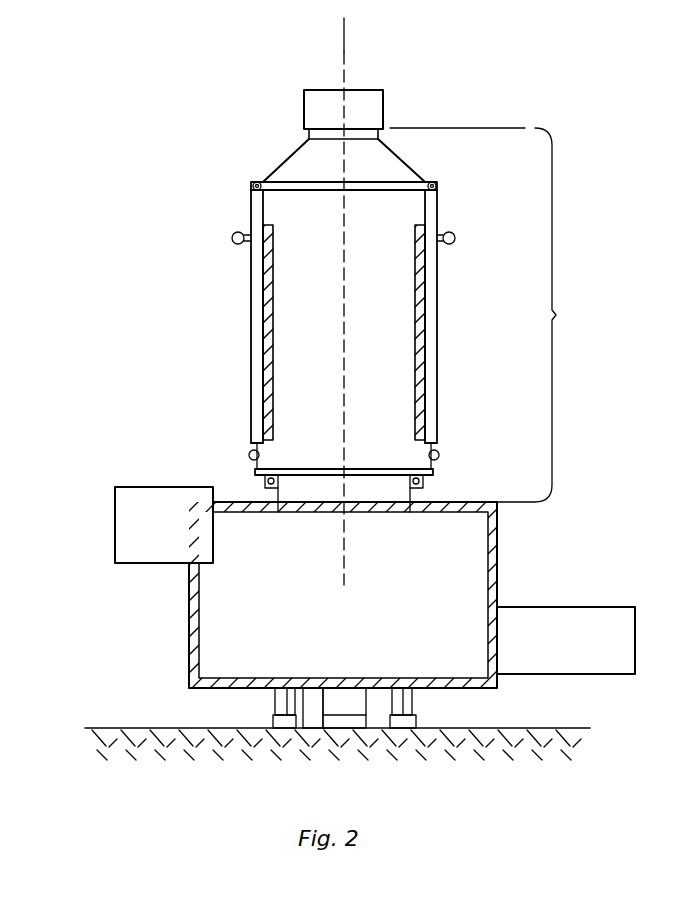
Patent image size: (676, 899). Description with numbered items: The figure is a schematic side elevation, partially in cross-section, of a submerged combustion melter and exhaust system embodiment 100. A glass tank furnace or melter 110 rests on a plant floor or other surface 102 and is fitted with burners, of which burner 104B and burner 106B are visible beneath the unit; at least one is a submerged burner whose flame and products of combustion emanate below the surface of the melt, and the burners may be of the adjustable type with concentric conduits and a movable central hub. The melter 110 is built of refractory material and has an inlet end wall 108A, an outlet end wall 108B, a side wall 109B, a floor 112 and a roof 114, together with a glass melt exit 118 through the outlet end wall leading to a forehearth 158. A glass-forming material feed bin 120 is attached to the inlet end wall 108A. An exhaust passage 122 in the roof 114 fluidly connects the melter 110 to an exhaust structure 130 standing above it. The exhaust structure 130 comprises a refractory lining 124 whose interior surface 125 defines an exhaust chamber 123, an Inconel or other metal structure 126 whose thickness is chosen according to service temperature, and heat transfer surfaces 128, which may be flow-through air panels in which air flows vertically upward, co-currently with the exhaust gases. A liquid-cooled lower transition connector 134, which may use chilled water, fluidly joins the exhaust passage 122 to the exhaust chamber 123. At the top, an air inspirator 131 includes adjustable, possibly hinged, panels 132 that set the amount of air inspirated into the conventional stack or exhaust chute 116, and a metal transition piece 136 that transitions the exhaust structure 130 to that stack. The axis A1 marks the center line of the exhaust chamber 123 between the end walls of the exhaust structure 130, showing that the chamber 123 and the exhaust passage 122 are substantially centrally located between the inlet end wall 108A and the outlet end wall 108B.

The axis A1 is at (344, 52).
The system embodiment 100 is at (503, 93).
The plant floor 102 is at (185, 740).
The burner 104B is at (310, 720).
The burner 106B is at (370, 715).
The inlet end wall 108A is at (189, 620).
The outlet end wall 108B is at (497, 533).
The side wall 109B is at (420, 636).
The melter 110 is at (465, 503).
The floor 112 is at (445, 690).
The roof 114 is at (452, 503).
The exhaust chute 116 is at (304, 108).
The glass melt exit 118 is at (497, 655).
The glass-forming material feed bin 120 is at (115, 525).
The exhaust passage 122 is at (400, 513).
The exhaust chamber 123 is at (404, 296).
The refractory lining 124 is at (271, 293).
The interior surface 125 is at (271, 340).
The metal structure 126 is at (263, 367).
The heat transfer surfaces 128 is at (257, 415).
The exhaust structure 130 is at (556, 315).
The air inspirator 131 is at (437, 184).
The adjustable panels 132 is at (250, 205).
The lower transition connector 134 is at (265, 492).
The metal transition piece 136 is at (292, 165).
The forehearth 158 is at (556, 607).